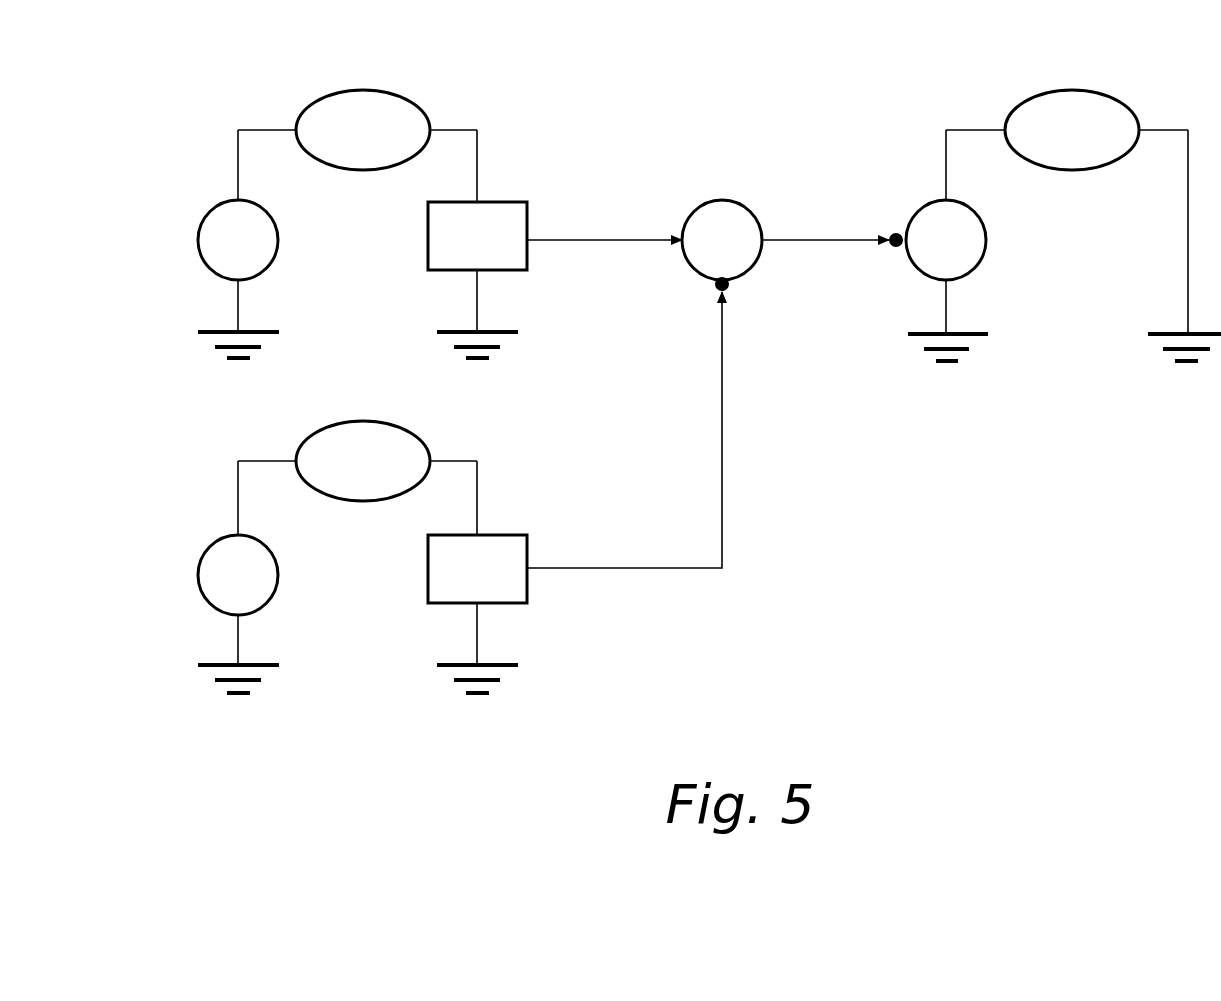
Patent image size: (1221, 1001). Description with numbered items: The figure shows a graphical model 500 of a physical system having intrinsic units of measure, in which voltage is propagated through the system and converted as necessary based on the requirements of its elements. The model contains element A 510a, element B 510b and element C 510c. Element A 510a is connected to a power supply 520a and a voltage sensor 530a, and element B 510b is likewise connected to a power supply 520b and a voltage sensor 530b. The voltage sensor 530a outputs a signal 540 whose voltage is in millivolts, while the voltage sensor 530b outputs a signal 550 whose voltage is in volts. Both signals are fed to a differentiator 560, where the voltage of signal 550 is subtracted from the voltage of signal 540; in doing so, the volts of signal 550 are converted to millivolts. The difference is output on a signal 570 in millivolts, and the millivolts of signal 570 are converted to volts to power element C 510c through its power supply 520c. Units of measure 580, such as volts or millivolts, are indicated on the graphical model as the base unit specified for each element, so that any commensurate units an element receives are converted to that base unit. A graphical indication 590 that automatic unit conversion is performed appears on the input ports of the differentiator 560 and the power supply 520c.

The graphical model 500 is at (668, 54).
The element A 510a is at (412, 93).
The element B 510b is at (342, 425).
The element C 510c is at (1097, 93).
The power supply 520a is at (270, 217).
The power supply 520b is at (275, 553).
The power supply 520c is at (988, 223).
The voltage sensor 530a is at (495, 202).
The voltage sensor 530b is at (497, 535).
The signal 540 is at (580, 264).
The signal 550 is at (573, 598).
The differentiator 560 is at (713, 202).
The signal 570 is at (829, 222).
The units of measure 580 is at (558, 208).
The graphical indication of auto conversion 590 is at (762, 321).